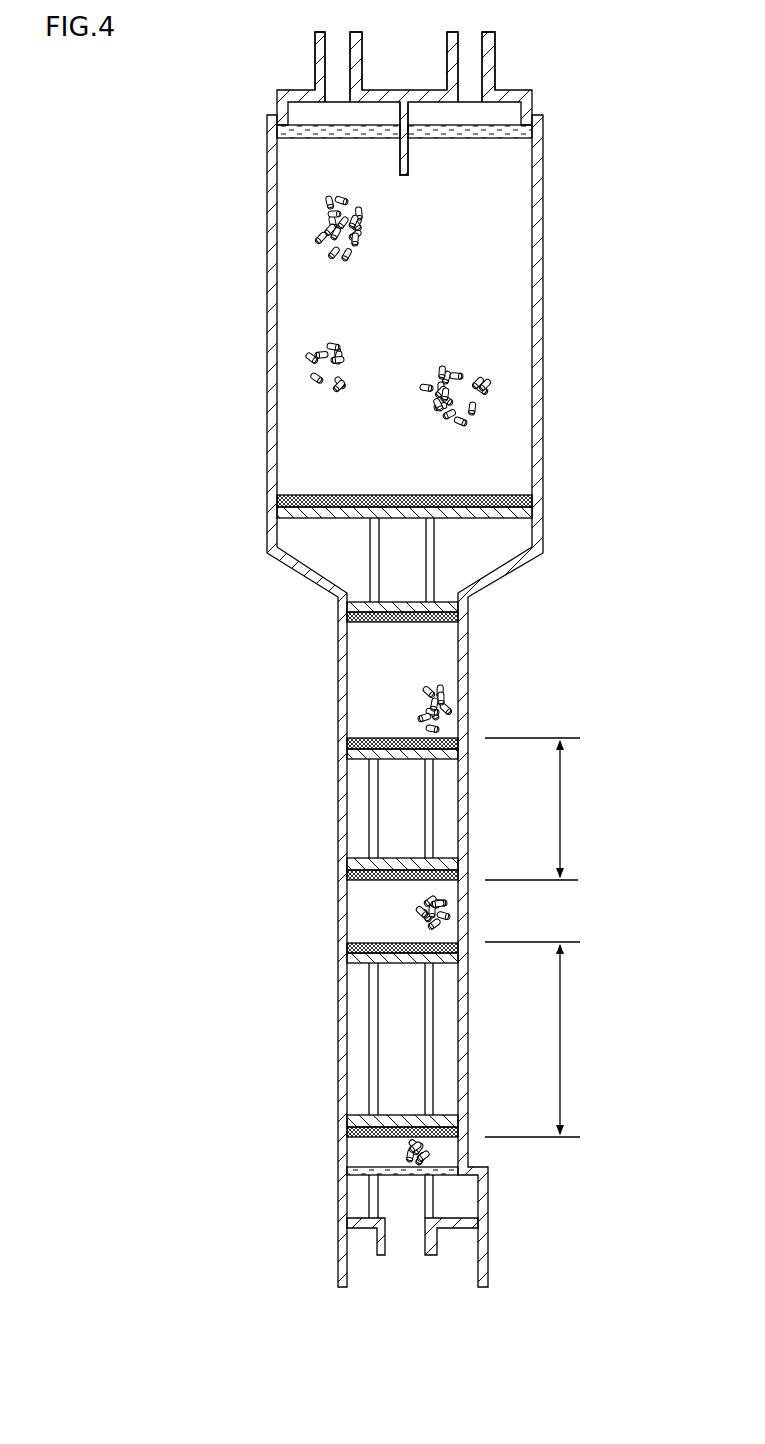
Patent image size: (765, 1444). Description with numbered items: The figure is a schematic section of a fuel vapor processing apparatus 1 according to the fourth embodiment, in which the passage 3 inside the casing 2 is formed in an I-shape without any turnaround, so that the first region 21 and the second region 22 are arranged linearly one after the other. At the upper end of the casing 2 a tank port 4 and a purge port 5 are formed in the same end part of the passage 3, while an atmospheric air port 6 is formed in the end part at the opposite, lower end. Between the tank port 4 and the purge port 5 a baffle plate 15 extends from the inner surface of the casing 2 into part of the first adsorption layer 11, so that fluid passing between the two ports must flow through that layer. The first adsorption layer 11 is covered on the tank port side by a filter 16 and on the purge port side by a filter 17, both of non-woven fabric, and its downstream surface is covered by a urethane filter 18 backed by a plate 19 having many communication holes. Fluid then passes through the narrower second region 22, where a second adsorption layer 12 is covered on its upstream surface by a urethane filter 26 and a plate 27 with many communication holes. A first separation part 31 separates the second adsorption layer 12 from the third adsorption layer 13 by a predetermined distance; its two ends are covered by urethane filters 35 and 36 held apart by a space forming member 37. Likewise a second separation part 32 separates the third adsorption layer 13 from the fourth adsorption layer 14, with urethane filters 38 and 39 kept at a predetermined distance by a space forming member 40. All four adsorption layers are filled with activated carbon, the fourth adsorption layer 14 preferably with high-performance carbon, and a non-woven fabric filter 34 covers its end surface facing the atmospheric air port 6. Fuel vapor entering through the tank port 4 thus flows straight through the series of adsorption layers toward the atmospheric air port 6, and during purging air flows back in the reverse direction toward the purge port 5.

The fuel vapor processing apparatus 1 is at (265, 100).
The casing 2 is at (267, 358).
The passage 3 is at (302, 313).
The tank port 4 is at (337, 55).
The purge port 5 is at (463, 50).
The atmospheric air port 6 is at (397, 1235).
The first adsorption layer 11 is at (342, 294).
The second adsorption layer 12 is at (363, 695).
The third adsorption layer 13 is at (366, 920).
The fourth adsorption layer 14 is at (355, 1150).
The baffle plate 15 is at (404, 167).
The filter 16 is at (353, 138).
The filter 17 is at (481, 138).
The filter 18 is at (370, 495).
The plate 19 is at (406, 495).
The first region 21 is at (298, 467).
The second region 22 is at (363, 1047).
The filter 26 is at (458, 612).
The plate 27 is at (348, 608).
The first separation part 31 is at (458, 808).
The second separation part 32 is at (398, 1039).
The filter 34 is at (348, 1172).
The filter 35 is at (348, 744).
The filter 36 is at (348, 874).
The space forming member 37 is at (433, 803).
The filter 38 is at (348, 950).
The filter 39 is at (348, 1128).
The space forming member 40 is at (428, 1010).